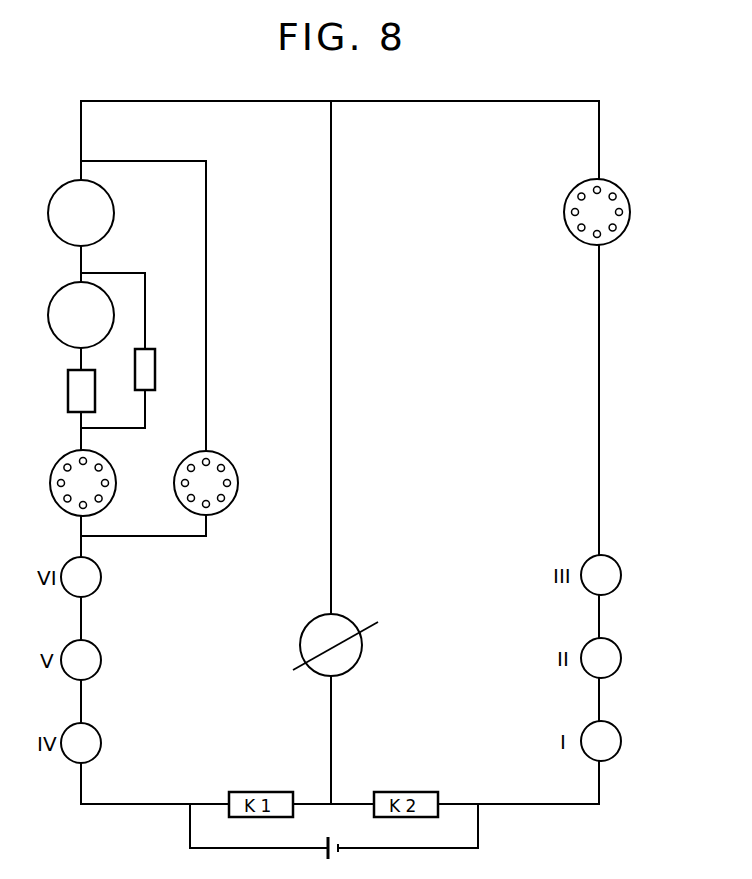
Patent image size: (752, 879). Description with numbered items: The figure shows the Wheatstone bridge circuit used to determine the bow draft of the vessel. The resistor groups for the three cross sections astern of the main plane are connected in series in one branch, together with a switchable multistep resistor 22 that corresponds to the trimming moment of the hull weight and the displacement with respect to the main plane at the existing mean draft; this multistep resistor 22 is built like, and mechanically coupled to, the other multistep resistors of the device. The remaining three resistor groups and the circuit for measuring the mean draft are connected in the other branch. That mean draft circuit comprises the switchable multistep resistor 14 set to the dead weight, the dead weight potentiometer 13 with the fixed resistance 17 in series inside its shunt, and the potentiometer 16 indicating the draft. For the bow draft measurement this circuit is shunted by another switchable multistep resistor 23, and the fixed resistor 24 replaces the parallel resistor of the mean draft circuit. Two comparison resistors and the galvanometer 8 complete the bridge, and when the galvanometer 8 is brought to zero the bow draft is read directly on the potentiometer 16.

The potentiometer indicating the draft 16 is at (100, 212).
The dead weight potentiometer 13 is at (103, 318).
The fixed resistance 17 is at (106, 387).
The fixed resistor 24 is at (155, 373).
The switchable multistep resistor 14 is at (110, 493).
The switchable multistep resistor 23 is at (232, 493).
The switchable multistep resistor 22 is at (571, 224).
The galvanometer 8 is at (342, 628).